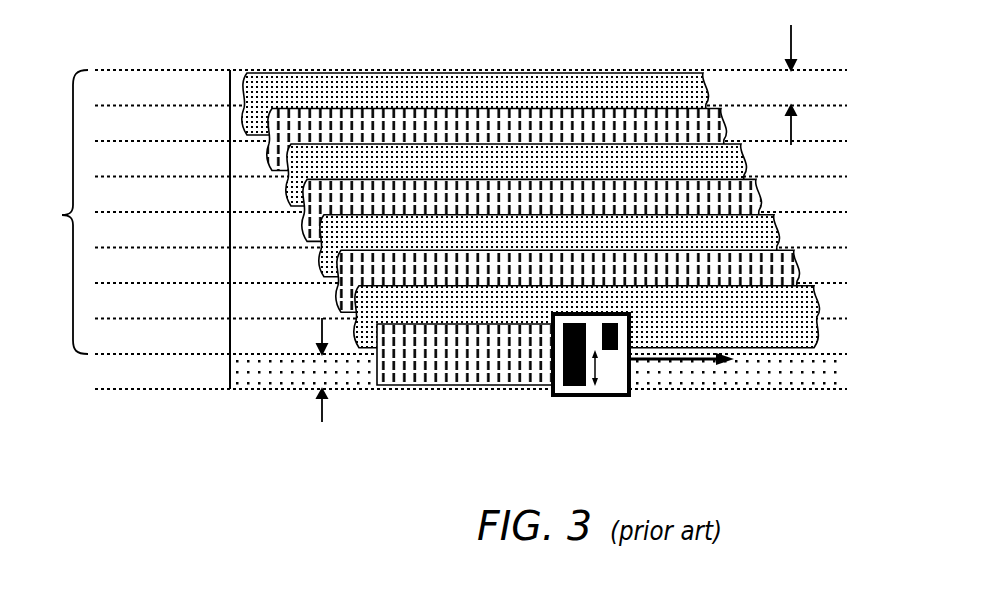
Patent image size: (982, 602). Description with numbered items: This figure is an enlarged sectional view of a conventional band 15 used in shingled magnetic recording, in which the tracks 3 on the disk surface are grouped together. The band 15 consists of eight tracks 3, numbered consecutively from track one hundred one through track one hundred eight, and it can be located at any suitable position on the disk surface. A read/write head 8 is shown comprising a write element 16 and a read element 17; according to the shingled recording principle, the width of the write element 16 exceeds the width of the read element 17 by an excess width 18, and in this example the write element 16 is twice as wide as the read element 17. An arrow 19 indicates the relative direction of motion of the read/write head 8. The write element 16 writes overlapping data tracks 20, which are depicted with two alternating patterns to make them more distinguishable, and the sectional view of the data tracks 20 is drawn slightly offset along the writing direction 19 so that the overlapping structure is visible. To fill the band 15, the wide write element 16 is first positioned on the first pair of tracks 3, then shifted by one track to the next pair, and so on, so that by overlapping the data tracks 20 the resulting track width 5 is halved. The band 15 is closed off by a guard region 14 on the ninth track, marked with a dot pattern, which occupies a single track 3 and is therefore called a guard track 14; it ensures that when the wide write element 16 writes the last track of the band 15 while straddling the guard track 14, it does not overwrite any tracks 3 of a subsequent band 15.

The track 3 is at (745, 92).
The track width 5 is at (565, 242).
The read/write head 8 is at (622, 375).
The guard region 14 is at (292, 372).
The band 15 is at (125, 229).
The write element 16 is at (557, 372).
The read element 17 is at (620, 337).
The excess width 18 is at (598, 365).
The arrow indicating direction of motion 19 is at (698, 359).
The overlapping data tracks 20 is at (502, 90).